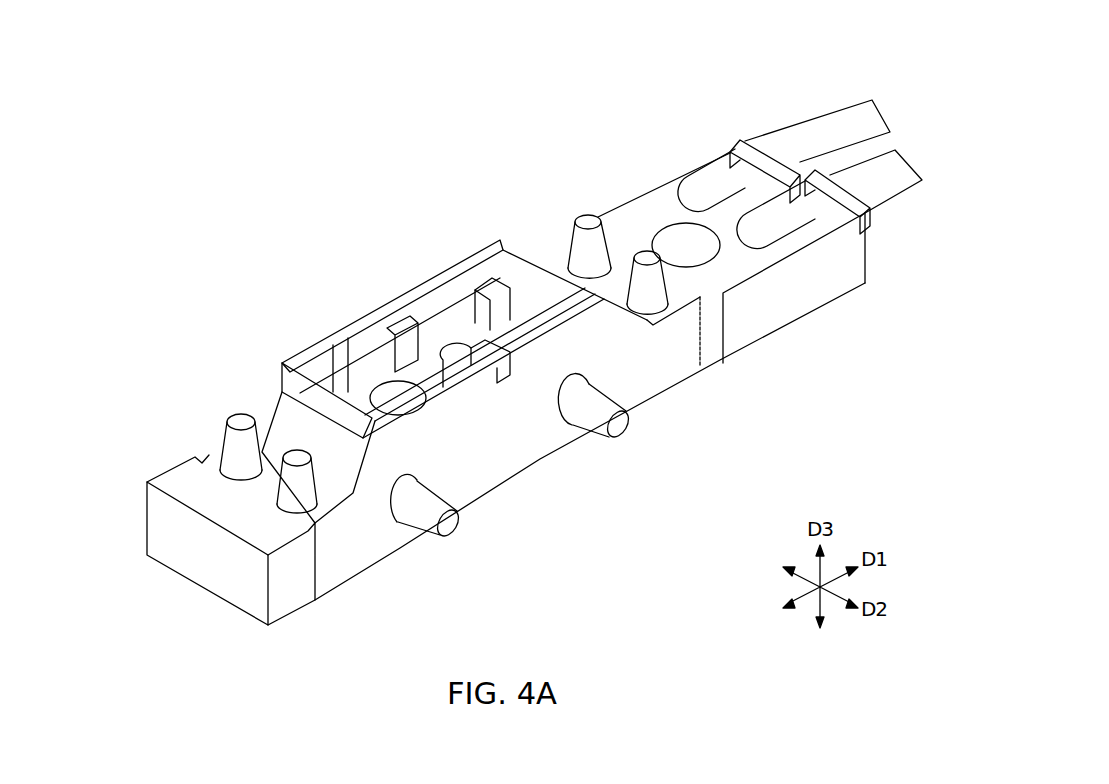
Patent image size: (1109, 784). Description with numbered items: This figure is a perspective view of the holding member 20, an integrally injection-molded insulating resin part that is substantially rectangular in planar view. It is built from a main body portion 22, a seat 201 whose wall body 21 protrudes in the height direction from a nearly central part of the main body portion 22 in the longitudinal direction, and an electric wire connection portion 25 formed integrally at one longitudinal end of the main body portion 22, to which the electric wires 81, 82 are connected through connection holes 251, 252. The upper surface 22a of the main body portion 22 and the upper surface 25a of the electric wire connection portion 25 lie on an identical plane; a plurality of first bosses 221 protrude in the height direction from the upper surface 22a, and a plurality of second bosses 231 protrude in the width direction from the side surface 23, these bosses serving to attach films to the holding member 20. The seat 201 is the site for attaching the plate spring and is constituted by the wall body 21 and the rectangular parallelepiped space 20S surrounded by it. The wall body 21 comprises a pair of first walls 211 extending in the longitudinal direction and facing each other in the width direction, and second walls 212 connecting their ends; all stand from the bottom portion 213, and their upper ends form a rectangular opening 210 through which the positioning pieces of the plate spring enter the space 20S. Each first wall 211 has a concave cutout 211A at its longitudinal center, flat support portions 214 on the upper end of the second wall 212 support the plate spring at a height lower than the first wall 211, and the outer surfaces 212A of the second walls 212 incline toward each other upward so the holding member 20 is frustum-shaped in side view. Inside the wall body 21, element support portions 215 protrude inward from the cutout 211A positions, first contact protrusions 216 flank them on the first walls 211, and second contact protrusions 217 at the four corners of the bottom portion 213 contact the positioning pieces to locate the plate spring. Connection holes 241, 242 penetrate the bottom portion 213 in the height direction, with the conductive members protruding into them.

The holding member 20 is at (597, 98).
The space 20S is at (472, 318).
The wall body 21 is at (483, 240).
The main body portion 22 is at (162, 478).
The upper surface of the main body portion 22a is at (190, 470).
The side surface of the main body portion 23 is at (484, 372).
The electric wire connection portion 25 is at (738, 150).
The upper surface of the electric wire connection portion 25a is at (727, 273).
The electric wire 81 is at (890, 198).
The electric wire 82 is at (818, 130).
The seat 201 is at (328, 441).
The opening 210 is at (573, 275).
The first wall 211 is at (450, 292).
The cutout 211A is at (392, 322).
The second wall 212 is at (527, 248).
The outer surface of the second wall 212A is at (337, 470).
The bottom portion 213 is at (362, 432).
The support portion 214 is at (533, 313).
The element support portion 215 is at (407, 312).
The first contact protrusion 216 is at (335, 400).
The second contact protrusion 217 is at (310, 388).
The first boss 221 is at (238, 414).
The second boss 231 is at (458, 530).
The connection hole 241 is at (398, 325).
The connection hole 242 is at (455, 248).
The connection hole 251 is at (760, 230).
The connection hole 252 is at (697, 190).